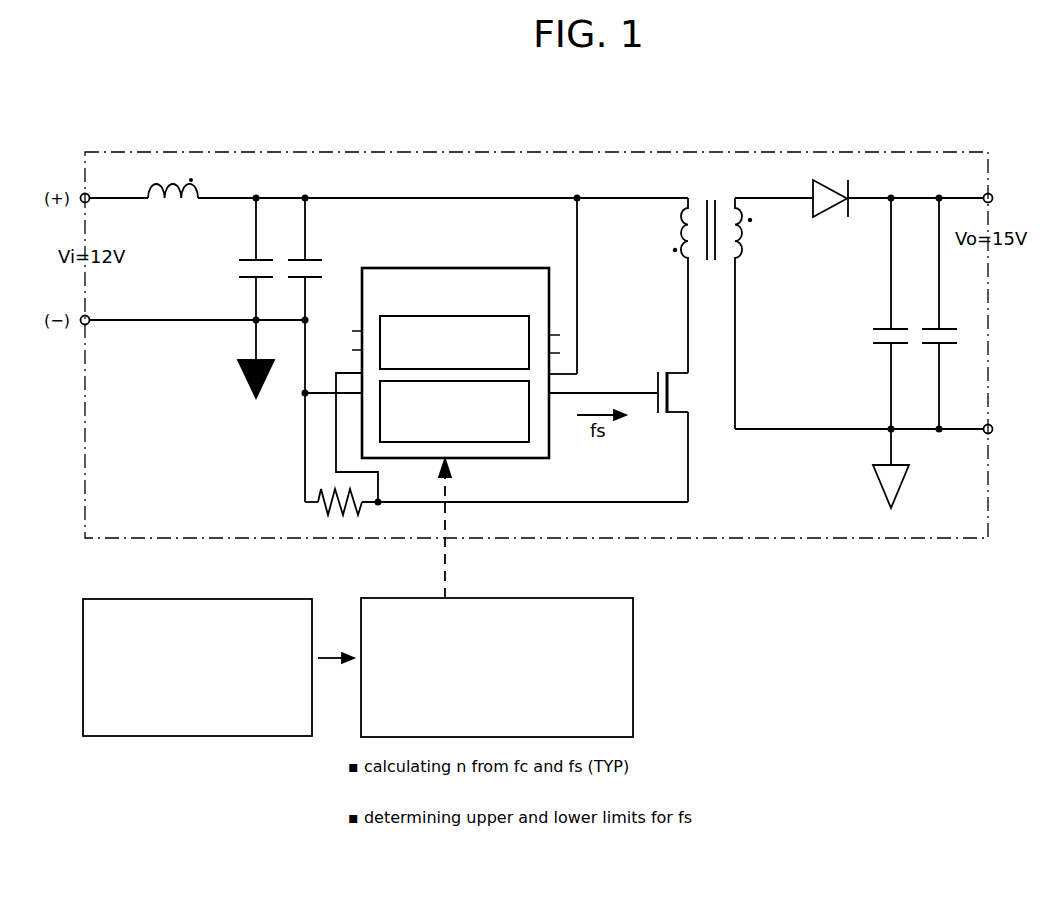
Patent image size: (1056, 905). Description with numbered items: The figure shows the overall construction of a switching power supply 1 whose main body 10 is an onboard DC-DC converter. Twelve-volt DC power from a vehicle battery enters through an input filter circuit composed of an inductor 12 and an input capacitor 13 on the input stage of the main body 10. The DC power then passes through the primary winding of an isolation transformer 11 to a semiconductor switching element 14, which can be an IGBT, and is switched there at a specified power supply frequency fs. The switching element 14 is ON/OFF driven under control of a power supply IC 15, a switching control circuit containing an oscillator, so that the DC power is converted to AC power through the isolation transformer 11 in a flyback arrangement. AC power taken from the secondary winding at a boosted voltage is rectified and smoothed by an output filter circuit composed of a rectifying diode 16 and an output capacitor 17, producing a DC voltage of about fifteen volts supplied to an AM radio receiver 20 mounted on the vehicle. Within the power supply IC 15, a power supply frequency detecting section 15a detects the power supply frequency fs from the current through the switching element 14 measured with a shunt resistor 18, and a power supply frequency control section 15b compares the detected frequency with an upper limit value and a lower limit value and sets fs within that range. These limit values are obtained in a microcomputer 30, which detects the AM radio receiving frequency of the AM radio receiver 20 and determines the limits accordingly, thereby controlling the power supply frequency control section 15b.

The switching power supply 1 is at (742, 614).
The main body of the switching power supply 10 is at (514, 164).
The isolation transformer 11 is at (750, 262).
The inductor 12 is at (175, 217).
The input capacitor 13 is at (238, 277).
The semiconductor switching element 14 is at (660, 368).
The power supply IC 15 is at (458, 361).
The power supply frequency detecting section 15a is at (457, 315).
The power supply frequency control section 15b is at (488, 442).
The rectifying diode 16 is at (827, 218).
The output capacitor 17 is at (867, 350).
The shunt resistor 18 is at (322, 506).
The AM radio receiver 20 is at (150, 602).
The microcomputer 30 is at (633, 667).